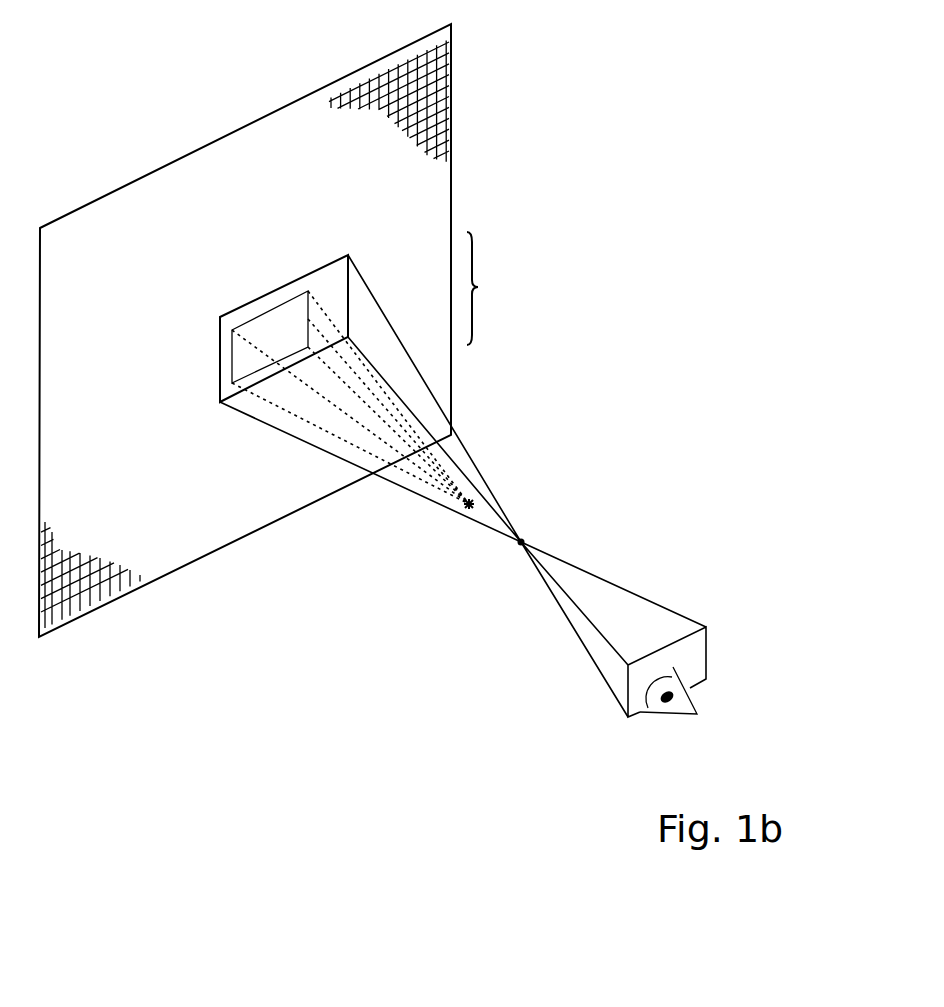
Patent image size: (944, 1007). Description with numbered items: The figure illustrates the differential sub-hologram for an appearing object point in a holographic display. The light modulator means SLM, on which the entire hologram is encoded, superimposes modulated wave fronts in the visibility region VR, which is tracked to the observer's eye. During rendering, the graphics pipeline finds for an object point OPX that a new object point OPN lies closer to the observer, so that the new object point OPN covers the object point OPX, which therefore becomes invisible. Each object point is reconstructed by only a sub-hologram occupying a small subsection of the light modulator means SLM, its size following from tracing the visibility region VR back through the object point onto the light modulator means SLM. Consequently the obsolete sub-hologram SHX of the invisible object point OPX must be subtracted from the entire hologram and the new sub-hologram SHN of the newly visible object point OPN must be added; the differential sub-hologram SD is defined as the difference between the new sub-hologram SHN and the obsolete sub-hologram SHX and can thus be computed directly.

The light modulator means SLM is at (140, 580).
The new sub-hologram SHN is at (321, 280).
The obsolete sub-hologram SHX is at (301, 328).
The object point OPX is at (471, 502).
The new object point OPN is at (523, 540).
The visibility region VR is at (700, 638).
The differential sub-hologram SD is at (548, 288).